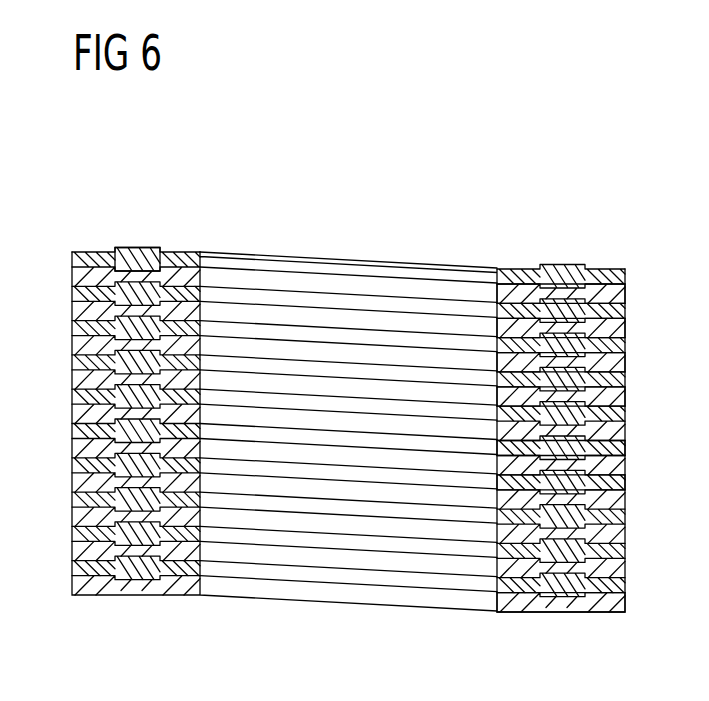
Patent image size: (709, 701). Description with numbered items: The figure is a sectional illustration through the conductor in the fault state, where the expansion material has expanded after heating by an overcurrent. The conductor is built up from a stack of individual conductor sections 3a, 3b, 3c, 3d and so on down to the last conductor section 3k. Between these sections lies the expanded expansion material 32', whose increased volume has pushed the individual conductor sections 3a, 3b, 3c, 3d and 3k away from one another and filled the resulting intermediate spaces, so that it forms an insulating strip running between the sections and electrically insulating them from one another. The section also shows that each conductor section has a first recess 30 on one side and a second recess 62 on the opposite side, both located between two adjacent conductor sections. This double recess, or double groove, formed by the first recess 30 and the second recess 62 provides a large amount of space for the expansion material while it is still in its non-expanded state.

The expanded expansion material 32' is at (137, 222).
The conductor section 3a is at (626, 292).
The conductor section 3b is at (626, 325).
The conductor section 3c is at (626, 360).
The conductor section 3d is at (626, 393).
The first recess 30 is at (626, 447).
The second recess 62 is at (605, 480).
The conductor section 3k is at (626, 596).